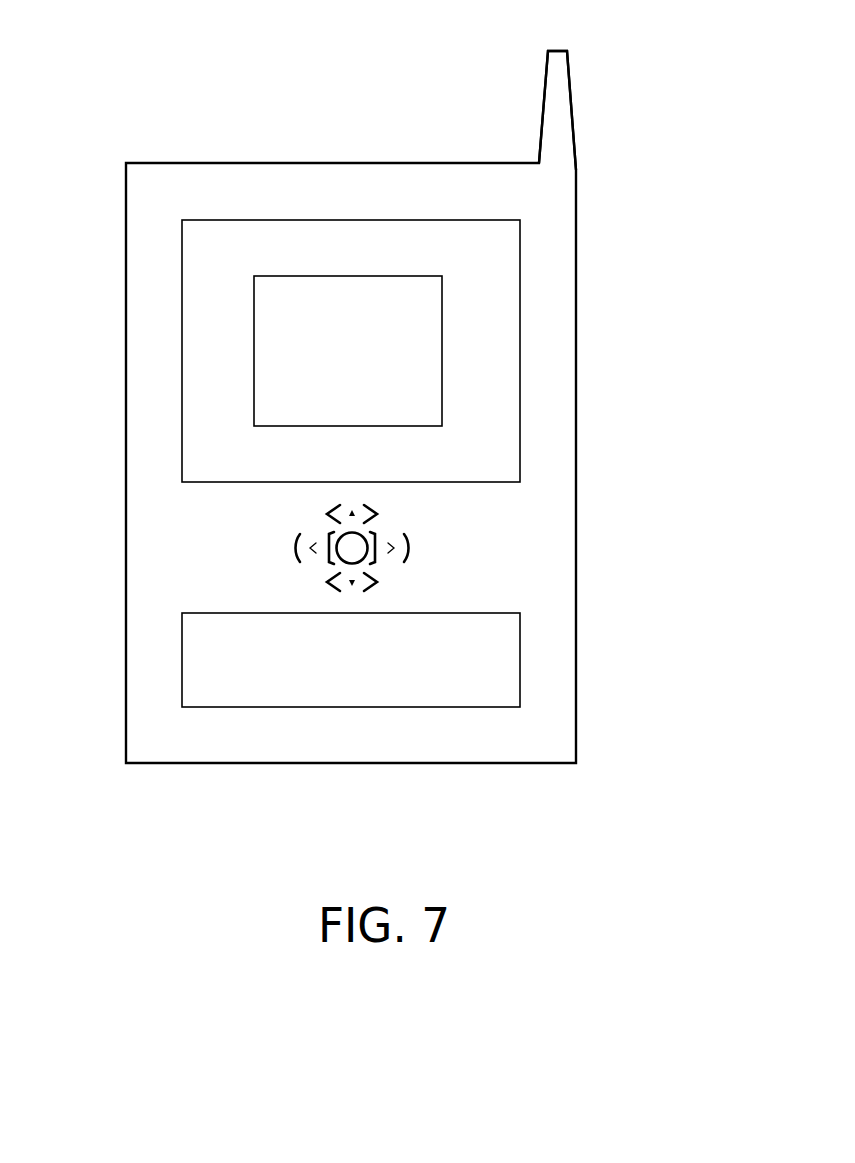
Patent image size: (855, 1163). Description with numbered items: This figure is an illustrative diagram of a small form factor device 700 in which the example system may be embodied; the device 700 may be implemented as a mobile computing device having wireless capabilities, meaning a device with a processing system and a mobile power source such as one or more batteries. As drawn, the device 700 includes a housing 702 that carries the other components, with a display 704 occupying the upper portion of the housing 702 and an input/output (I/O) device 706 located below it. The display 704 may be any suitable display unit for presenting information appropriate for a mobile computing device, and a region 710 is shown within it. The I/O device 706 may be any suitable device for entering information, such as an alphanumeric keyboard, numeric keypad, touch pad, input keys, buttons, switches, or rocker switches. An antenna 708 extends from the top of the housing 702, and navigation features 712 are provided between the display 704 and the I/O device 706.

The small form factor device 700 is at (142, 70).
The housing 702 is at (577, 465).
The display 704 is at (520, 238).
The input/output (I/O) device 706 is at (520, 650).
The antenna 708 is at (543, 100).
The display window 710 is at (442, 370).
The navigation features 712 is at (424, 540).